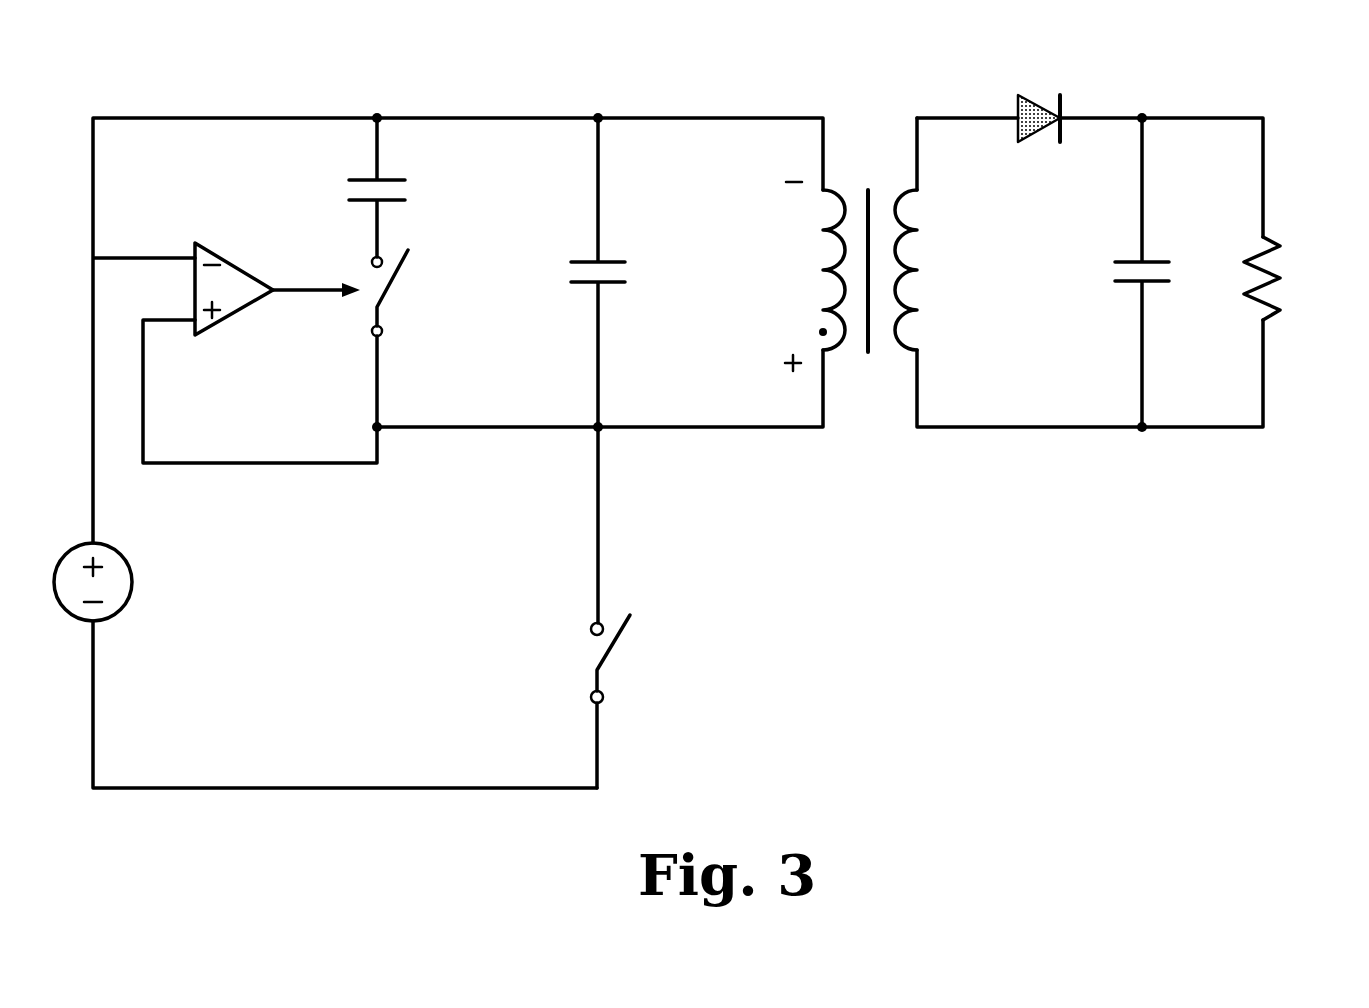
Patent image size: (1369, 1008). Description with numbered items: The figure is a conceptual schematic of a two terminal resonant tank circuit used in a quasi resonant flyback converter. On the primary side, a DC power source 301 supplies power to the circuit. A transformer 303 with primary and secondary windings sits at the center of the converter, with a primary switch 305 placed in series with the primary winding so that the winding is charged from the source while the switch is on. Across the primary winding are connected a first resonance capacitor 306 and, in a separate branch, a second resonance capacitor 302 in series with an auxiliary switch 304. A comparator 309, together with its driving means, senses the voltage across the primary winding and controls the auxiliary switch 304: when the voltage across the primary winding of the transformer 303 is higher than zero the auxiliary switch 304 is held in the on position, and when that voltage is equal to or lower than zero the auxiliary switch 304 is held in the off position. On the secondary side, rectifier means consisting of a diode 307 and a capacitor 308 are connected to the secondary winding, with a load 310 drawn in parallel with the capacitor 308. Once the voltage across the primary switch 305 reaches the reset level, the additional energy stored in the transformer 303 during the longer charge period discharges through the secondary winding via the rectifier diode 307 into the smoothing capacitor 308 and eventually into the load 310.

The DC power source 301 is at (112, 618).
The second resonance capacitor 302 is at (390, 203).
The transformer 303 is at (848, 188).
The auxiliary switch 304 is at (393, 278).
The primary switch 305 is at (618, 640).
The first resonance capacitor 306 is at (618, 283).
The diode 307 is at (1018, 96).
The capacitor 308 is at (1128, 283).
The comparator 309 is at (232, 313).
The load 310 is at (1282, 310).